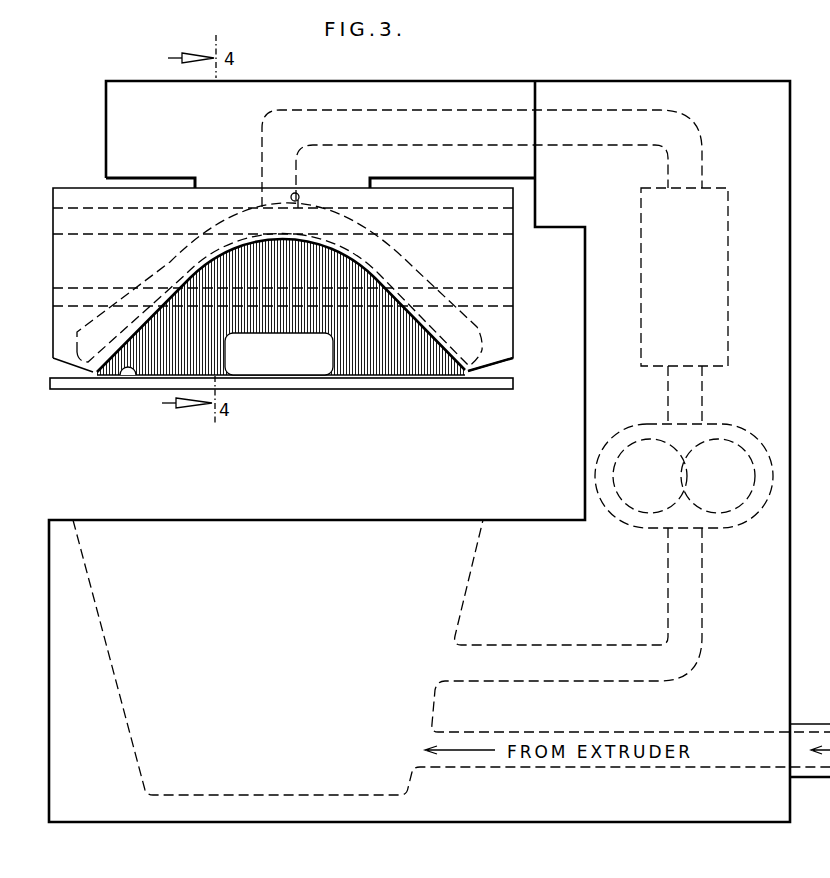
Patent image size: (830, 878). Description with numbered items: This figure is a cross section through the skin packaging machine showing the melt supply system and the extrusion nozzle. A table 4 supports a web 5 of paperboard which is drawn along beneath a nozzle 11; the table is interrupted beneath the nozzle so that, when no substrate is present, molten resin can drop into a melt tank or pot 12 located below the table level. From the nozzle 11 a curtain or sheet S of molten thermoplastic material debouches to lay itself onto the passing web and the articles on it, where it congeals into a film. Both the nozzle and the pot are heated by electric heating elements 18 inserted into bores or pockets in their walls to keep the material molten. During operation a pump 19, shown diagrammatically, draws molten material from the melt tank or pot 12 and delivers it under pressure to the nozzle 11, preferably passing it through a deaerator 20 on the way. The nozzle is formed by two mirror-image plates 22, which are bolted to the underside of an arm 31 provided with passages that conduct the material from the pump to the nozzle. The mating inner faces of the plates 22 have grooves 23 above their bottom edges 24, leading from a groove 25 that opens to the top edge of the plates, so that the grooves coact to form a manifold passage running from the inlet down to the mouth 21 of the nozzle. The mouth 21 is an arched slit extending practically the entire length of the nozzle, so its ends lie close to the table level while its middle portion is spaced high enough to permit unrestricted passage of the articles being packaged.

The table 4 is at (62, 379).
The web 5 is at (122, 376).
The nozzle 11 is at (70, 249).
The melt tank or pot 12 is at (88, 548).
The electric heating elements 18 is at (75, 206).
The pump 19 is at (763, 443).
The deaerator 20 is at (730, 268).
The mouth 21 is at (322, 259).
The plates 22 is at (500, 320).
The grooves 23 is at (405, 262).
The bottom edges 24 is at (185, 283).
The groove 25 is at (300, 194).
The arm 31 is at (372, 98).
The curtain or sheet of molten thermoplastic material S is at (395, 355).